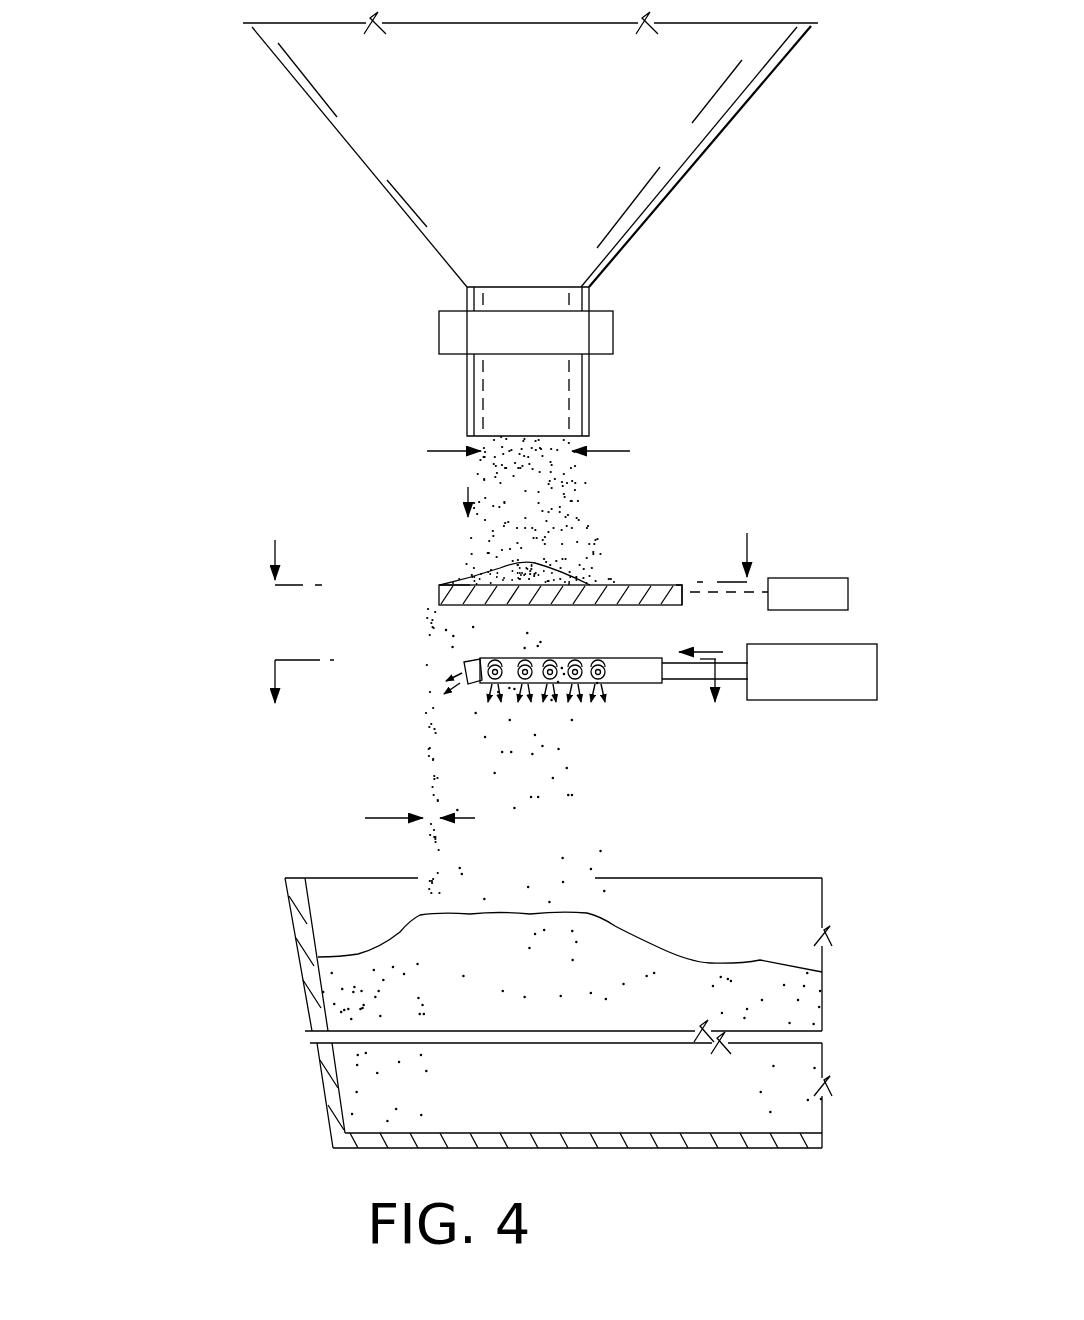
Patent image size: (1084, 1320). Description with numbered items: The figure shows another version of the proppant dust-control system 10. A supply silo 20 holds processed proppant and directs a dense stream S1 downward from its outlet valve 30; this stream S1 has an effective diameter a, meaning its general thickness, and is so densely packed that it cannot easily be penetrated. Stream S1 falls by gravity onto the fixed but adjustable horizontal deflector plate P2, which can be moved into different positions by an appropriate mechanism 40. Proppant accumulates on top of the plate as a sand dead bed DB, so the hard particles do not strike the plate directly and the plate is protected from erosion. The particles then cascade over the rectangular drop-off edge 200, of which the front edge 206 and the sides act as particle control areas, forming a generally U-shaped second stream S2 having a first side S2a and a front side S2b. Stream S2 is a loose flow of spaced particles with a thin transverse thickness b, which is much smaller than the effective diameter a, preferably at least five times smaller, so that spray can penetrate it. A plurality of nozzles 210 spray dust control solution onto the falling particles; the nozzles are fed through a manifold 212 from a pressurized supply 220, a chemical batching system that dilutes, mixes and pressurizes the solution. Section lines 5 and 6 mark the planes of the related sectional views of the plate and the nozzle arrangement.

The system 10 is at (200, 95).
The supply silo 20 is at (675, 182).
The outlet valve 30 is at (604, 329).
The mechanism 40 is at (802, 587).
The drop-off edge 200 is at (433, 598).
The front edge 206 is at (432, 584).
The nozzles 210 is at (477, 667).
The manifold 212 is at (643, 681).
The pressurized supply 220 is at (813, 697).
The powder bed DB is at (553, 577).
The deflector plate P2 is at (659, 579).
The stream S1 is at (566, 499).
The second stream S2 is at (506, 755).
The first side S2a is at (567, 777).
The front side S2b is at (430, 763).
The effective diameter a is at (539, 450).
The thickness b is at (408, 819).
The section line 5 is at (502, 552).
The section line 6 is at (483, 702).